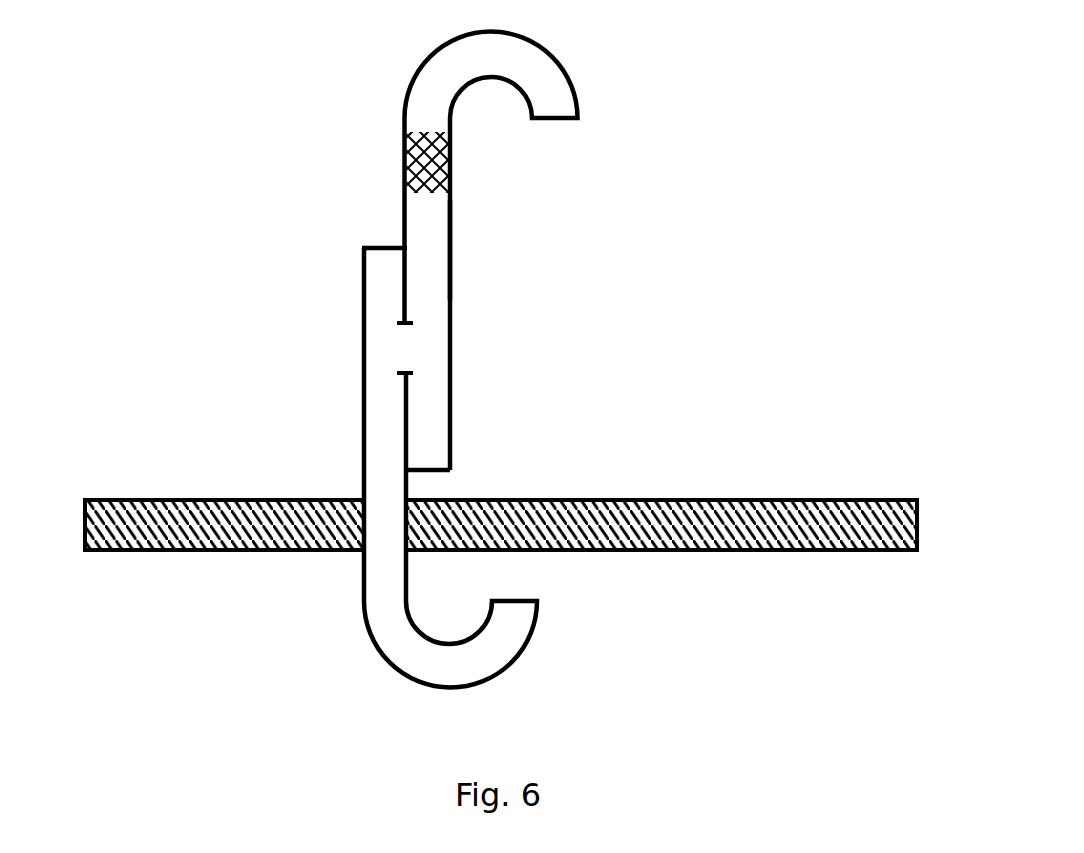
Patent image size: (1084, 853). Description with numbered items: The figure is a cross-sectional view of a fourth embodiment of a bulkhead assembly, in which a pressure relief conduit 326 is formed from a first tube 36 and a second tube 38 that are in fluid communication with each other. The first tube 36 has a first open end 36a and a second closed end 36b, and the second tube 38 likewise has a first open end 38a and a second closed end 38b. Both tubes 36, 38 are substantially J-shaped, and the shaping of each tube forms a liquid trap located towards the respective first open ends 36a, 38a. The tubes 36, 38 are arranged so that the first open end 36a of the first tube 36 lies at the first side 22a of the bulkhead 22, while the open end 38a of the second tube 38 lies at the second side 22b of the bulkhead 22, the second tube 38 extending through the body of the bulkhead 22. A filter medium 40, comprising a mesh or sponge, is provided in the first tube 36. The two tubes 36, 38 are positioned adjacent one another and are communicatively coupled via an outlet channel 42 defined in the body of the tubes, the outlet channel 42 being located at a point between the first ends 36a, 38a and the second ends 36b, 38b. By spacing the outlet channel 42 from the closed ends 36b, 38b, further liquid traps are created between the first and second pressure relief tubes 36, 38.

The bulkhead 22 is at (760, 499).
The first side of the bulkhead 22a is at (617, 499).
The second side of the bulkhead 22b is at (755, 551).
The first tube 36 is at (407, 93).
The first open end of the first tube 36a is at (557, 123).
The second closed end of the first tube 36b is at (443, 473).
The second tube 38 is at (363, 384).
The first open end of the second tube 38a is at (533, 597).
The second closed end of the second tube 38b is at (383, 243).
The filter medium 40 is at (455, 170).
The outlet channel 42 is at (367, 337).
The pressure relief conduit 326 is at (457, 247).